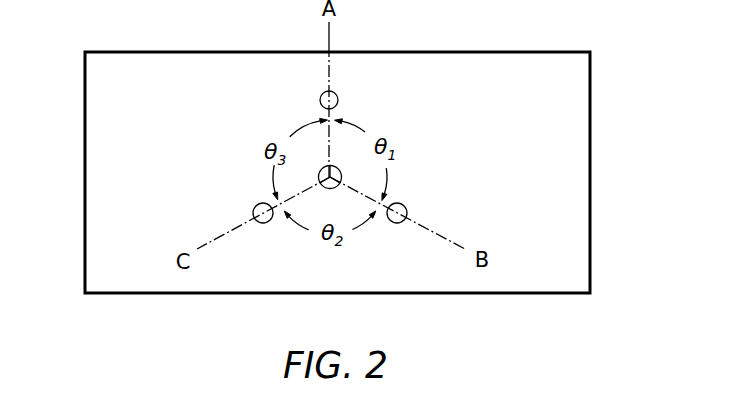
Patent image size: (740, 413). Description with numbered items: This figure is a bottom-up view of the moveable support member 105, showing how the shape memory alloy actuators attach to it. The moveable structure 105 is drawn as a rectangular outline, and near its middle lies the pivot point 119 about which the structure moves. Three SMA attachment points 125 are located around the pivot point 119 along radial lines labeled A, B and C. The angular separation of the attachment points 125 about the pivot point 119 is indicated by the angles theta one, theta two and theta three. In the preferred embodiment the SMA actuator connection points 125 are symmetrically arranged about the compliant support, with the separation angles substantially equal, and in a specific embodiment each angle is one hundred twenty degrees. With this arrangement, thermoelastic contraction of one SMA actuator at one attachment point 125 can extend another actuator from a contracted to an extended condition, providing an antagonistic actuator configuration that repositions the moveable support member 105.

The moveable support member 105 is at (488, 67).
The pivot point 119 is at (341, 176).
The SMA attachment points 125 is at (337, 94).